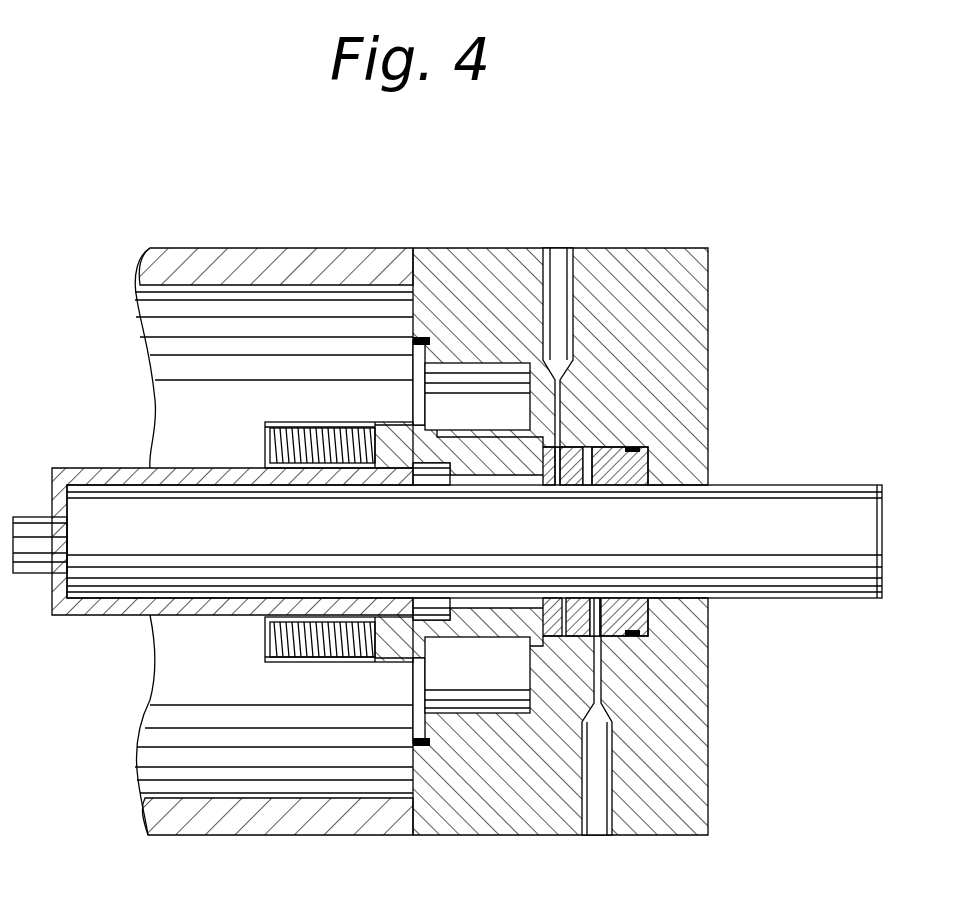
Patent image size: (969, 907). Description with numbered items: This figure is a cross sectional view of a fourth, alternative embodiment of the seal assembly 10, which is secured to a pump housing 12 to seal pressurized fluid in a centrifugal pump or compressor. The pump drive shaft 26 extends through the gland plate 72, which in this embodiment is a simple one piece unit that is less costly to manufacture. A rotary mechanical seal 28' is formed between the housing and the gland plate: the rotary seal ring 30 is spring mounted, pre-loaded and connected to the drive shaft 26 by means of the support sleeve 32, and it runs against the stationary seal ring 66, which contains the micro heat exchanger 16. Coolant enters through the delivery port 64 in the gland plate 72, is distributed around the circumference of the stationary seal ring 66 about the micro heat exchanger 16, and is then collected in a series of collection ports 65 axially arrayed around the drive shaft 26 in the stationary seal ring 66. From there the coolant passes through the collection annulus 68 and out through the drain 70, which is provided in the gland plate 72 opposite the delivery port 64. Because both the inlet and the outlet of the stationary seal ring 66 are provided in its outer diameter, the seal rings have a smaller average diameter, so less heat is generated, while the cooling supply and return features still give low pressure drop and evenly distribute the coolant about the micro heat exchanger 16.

The seal assembly 10 is at (738, 270).
The pump housing 12 is at (266, 258).
The micro heat exchanger 16 is at (548, 458).
The drive shaft 26 is at (762, 508).
The flow direction 28' is at (137, 714).
The rotary seal ring 30 is at (500, 640).
The support sleeve 32 is at (175, 618).
The delivery port 64 is at (563, 258).
The collection ports 65 is at (568, 597).
The stationary seal ring 66 is at (640, 449).
The collection annulus 68 is at (650, 482).
The drain 70 is at (601, 835).
The gland plate 72 is at (627, 258).